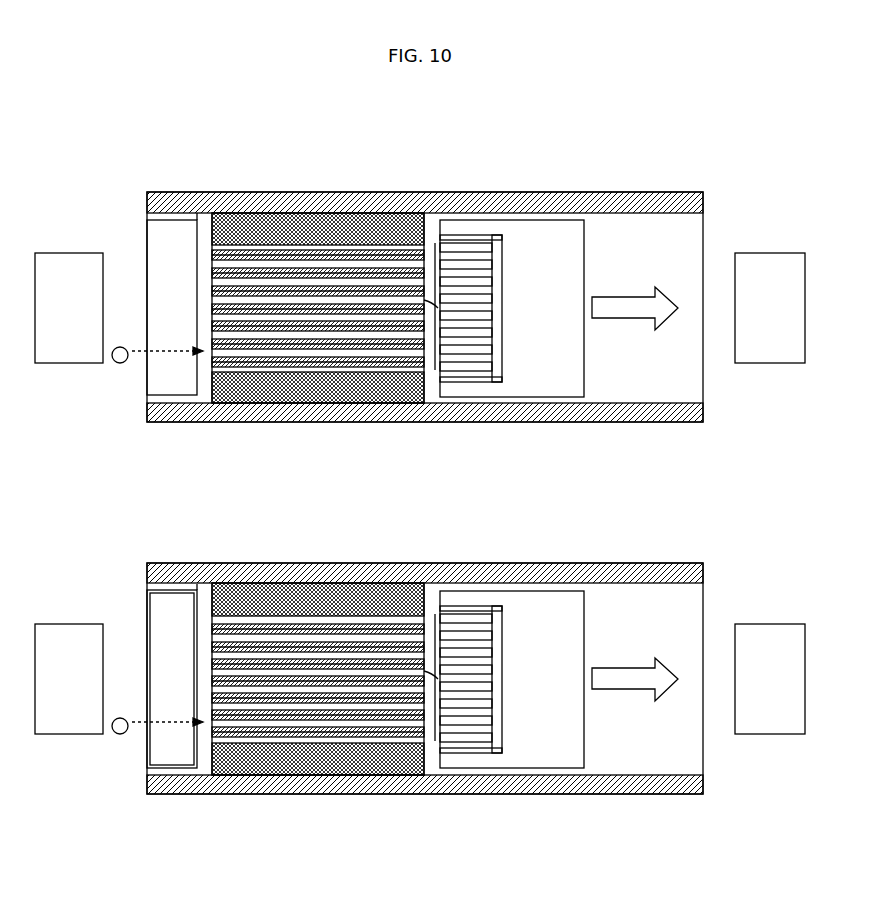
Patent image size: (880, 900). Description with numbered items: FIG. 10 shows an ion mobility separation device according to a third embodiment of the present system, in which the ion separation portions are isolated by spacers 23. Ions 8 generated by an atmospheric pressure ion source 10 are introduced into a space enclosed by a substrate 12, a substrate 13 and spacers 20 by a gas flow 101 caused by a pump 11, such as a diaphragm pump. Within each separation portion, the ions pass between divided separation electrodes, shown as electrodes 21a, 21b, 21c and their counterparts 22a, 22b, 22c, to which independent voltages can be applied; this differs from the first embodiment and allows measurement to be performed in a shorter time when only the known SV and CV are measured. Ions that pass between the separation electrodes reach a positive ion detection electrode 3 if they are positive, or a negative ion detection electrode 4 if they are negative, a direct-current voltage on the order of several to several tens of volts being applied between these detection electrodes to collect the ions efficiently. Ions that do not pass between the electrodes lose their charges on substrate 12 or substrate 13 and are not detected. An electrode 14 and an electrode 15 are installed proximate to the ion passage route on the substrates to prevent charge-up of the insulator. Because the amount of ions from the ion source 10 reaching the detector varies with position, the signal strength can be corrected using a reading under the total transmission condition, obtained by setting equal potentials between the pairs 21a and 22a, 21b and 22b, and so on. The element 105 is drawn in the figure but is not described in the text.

The positive ion detection electrode 3 is at (344, 667).
The negative ion detection electrode 4 is at (344, 299).
The ions 8 is at (117, 364).
The atmospheric pressure ion source 10 is at (69, 493).
The pump 11 is at (770, 493).
The substrate 12 is at (622, 228).
The substrate 13 is at (652, 598).
The electrode 14 is at (547, 617).
The electrode 15 is at (153, 613).
The spacers 20 is at (200, 565).
The divided separation electrode 21a is at (247, 251).
The divided separation electrode 21b is at (257, 265).
The divided separation electrode 21c is at (347, 354).
The divided separation electrode 22a is at (247, 624).
The divided separation electrode 22b is at (257, 638).
The divided separation electrode 22c is at (347, 725).
The spacers 23 is at (380, 363).
The gas flow 101 is at (625, 298).
The input cavity of second module 105 is at (160, 715).